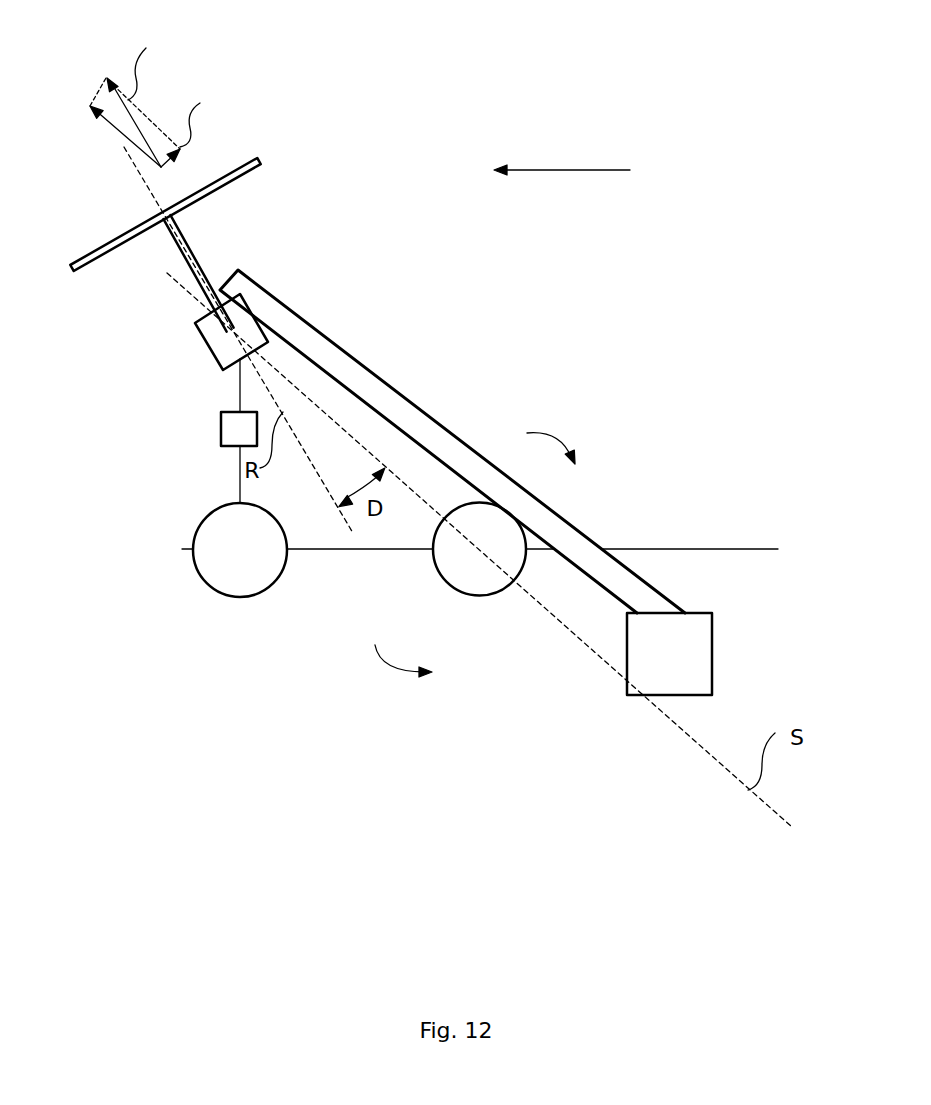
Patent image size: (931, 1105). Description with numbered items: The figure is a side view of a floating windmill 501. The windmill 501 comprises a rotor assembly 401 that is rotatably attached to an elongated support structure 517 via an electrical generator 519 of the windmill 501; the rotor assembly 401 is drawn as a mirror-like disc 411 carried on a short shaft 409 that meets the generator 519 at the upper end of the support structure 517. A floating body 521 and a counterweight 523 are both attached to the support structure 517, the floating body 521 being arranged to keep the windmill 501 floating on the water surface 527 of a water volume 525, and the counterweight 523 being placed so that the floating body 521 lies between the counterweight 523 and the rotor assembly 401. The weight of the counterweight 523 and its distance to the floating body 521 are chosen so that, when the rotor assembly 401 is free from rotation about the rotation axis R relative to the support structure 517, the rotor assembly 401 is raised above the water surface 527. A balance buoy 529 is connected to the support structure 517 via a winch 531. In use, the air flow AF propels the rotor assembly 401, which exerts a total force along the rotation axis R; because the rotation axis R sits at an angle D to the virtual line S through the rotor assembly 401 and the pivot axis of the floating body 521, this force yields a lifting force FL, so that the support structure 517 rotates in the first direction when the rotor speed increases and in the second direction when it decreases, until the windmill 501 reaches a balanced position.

The rotor assembly 401 is at (240, 118).
The mirror support rod 409 is at (187, 263).
The mirror 411 is at (93, 265).
The windmill 501 is at (693, 230).
The support structure 517 is at (397, 390).
The electrical generator 519 is at (227, 350).
The floating body 521 is at (452, 557).
The counterweight 523 is at (658, 675).
The water volume 525 is at (405, 715).
The water surface 527 is at (655, 546).
The balance buoy 529 is at (222, 592).
The winch 531 is at (235, 430).